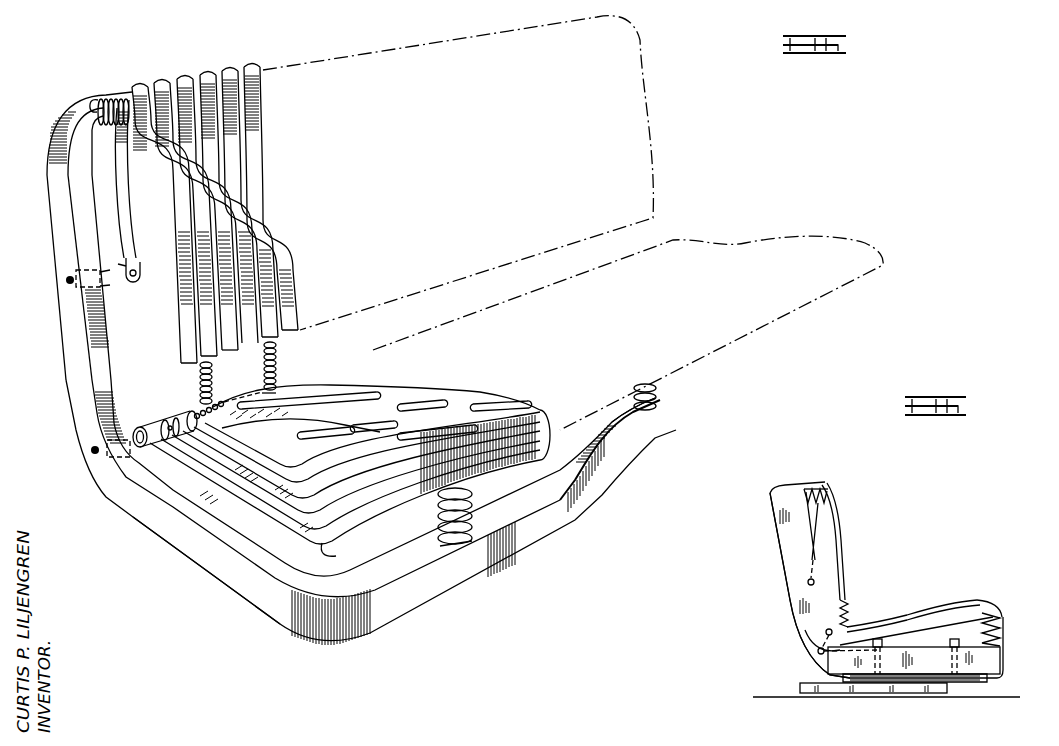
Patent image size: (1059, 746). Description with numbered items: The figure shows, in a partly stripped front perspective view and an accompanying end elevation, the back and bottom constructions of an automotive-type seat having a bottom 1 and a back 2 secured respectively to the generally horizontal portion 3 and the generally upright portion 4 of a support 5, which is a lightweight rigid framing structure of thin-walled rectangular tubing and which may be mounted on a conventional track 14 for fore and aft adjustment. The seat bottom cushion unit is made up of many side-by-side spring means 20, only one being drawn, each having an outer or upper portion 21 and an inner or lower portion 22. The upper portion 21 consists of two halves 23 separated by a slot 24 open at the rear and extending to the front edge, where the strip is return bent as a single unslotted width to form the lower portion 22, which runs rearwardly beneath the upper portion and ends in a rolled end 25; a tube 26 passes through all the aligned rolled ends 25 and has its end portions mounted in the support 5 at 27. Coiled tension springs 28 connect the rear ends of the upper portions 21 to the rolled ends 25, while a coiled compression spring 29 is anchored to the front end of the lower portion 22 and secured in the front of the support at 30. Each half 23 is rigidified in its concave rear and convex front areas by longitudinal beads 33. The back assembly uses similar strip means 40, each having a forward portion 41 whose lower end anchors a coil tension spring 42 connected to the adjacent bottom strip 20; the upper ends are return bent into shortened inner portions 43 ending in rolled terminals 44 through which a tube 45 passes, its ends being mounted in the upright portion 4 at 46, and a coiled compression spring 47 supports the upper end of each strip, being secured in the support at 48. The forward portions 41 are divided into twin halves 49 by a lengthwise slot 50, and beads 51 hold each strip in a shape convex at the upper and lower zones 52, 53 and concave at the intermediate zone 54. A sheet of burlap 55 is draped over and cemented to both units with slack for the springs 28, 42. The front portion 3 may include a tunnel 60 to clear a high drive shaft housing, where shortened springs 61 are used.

In FIG. 4, the bottom 1 is at (838, 253).
In FIG. 4, the back 2 is at (632, 163).
In FIG. 4, the generally horizontal portion 3 is at (446, 578).
In FIG. 5, the generally horizontal portion 3 is at (943, 667).
In FIG. 4, the generally upright portion 4 is at (70, 344).
In FIG. 5, the generally upright portion 4 is at (790, 553).
In FIG. 4, the support 5 is at (106, 495).
In FIG. 5, the support 5 is at (802, 656).
In FIG. 5, the track 14 is at (828, 695).
In FIG. 4, the spring means 20 is at (354, 464).
In FIG. 4, the outer or upper portion 21 is at (438, 396).
In FIG. 5, the outer or upper portion 21 is at (898, 617).
In FIG. 4, the inner or lower portion 22 is at (335, 553).
In FIG. 5, the inner or lower portion 22 is at (945, 627).
In FIG. 4, the halves 23 is at (368, 393).
In FIG. 4, the slot 24 is at (462, 420).
In FIG. 4, the rolled end 25 is at (167, 422).
In FIG. 4, the tube 26 is at (139, 427).
In FIG. 4, the mounting of tube ends 27 is at (92, 451).
In FIG. 5, the mounting of tube ends 27 is at (819, 654).
In FIG. 4, the coiled tension springs 28 is at (193, 414).
In FIG. 5, the coiled tension springs 28 is at (826, 634).
In FIG. 4, the coiled compression spring 29 is at (472, 507).
In FIG. 5, the coiled compression spring 29 is at (1003, 630).
In FIG. 4, the spring anchorage in support 30 is at (442, 548).
In FIG. 4, the longitudinal beads 33 is at (318, 398).
In FIG. 4, the strip means 40 is at (211, 194).
In FIG. 5, the strip means 40 is at (828, 484).
In FIG. 4, the outer or forward portion 41 is at (265, 172).
In FIG. 5, the outer or forward portion 41 is at (841, 532).
In FIG. 4, the coil tension spring 42 is at (212, 368).
In FIG. 5, the coil tension spring 42 is at (846, 614).
In FIG. 4, the inner portions 43 is at (127, 167).
In FIG. 5, the inner portions 43 is at (815, 528).
In FIG. 4, the rolled terminals 44 is at (138, 280).
In FIG. 4, the tube 45 is at (128, 278).
In FIG. 4, the mounting of tube ends 46 is at (67, 279).
In FIG. 5, the mounting of tube ends 46 is at (808, 584).
In FIG. 4, the coiled compression spring 47 is at (123, 97).
In FIG. 5, the coiled compression spring 47 is at (815, 489).
In FIG. 4, the spring anchorage in support 48 is at (97, 100).
In FIG. 4, the twin halves 49 is at (210, 333).
In FIG. 4, the lengthwise slot 50 is at (233, 350).
In FIG. 4, the beads 51 is at (162, 190).
In FIG. 4, the upper convex zone 52 is at (252, 126).
In FIG. 4, the lower convex zone 53 is at (205, 287).
In FIG. 4, the intermediate concave zone 54 is at (180, 208).
In FIG. 5, the sheet of burlap 55 is at (773, 491).
In FIG. 4, the tunnel 60 is at (661, 445).
In FIG. 4, the shortened springs 61 is at (634, 392).